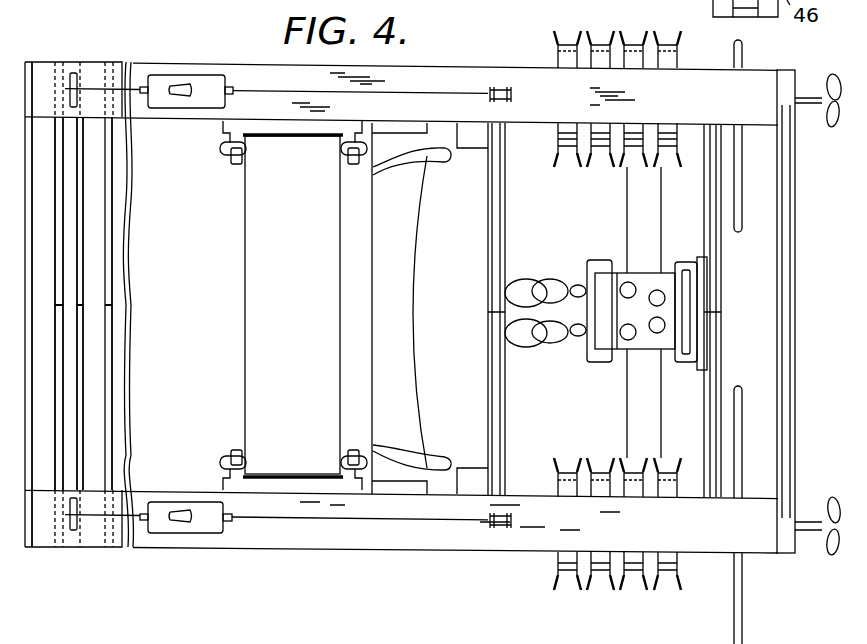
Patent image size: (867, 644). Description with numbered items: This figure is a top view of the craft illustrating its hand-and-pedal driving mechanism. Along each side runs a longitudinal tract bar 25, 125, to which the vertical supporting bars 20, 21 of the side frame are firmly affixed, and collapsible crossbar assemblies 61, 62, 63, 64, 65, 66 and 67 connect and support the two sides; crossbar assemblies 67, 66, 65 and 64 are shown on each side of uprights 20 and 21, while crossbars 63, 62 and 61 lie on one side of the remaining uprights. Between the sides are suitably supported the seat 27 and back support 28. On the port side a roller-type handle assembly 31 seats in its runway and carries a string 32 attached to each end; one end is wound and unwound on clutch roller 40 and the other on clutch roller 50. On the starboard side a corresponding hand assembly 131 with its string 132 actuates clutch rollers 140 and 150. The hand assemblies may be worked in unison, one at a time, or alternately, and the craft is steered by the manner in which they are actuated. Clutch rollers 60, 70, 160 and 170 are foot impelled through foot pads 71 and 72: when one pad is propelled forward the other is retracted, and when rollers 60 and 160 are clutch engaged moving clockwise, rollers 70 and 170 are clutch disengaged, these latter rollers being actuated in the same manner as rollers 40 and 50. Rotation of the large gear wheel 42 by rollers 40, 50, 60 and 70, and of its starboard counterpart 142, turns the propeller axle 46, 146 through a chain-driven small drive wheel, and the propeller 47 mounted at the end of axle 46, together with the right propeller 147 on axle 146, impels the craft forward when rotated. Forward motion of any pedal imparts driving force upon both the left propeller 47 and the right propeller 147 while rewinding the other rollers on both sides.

The vertical supporting bar 20 is at (45, 418).
The vertical supporting bar 21 is at (92, 452).
The longitudinal tract bar 25 is at (401, 521).
The longitudinal tract bar 125 is at (401, 94).
The seat 27 is at (293, 305).
The back support 28 is at (430, 308).
The handle assembly 31 is at (202, 523).
The hand assembly 131 is at (202, 87).
The string 32 is at (133, 537).
The string 132 is at (131, 62).
The clutch roller 40 is at (560, 561).
The clutch roller 50 is at (602, 578).
The clutch roller 60 is at (637, 578).
The clutch roller 70 is at (676, 570).
The clutch roller 140 is at (562, 58).
The clutch roller 150 is at (598, 44).
The clutch roller 160 is at (636, 44).
The clutch roller 170 is at (676, 55).
The large gear wheel 42 is at (744, 611).
The large gear wheel 142 is at (740, 64).
The propeller axle 46 is at (812, 530).
The propeller axle 146 is at (808, 93).
The propeller 47 is at (832, 496).
The propeller 147 is at (834, 116).
The collapsible crossbar assembly 61 is at (794, 246).
The collapsible crossbar assembly 62 is at (705, 218).
The collapsible crossbar assembly 63 is at (504, 214).
The collapsible crossbar assembly 64 is at (118, 321).
The collapsible crossbar assembly 65 is at (90, 213).
The collapsible crossbar assembly 66 is at (68, 186).
The collapsible crossbar assembly 67 is at (38, 262).
The foot pad 71 is at (545, 287).
The foot pad 72 is at (553, 335).